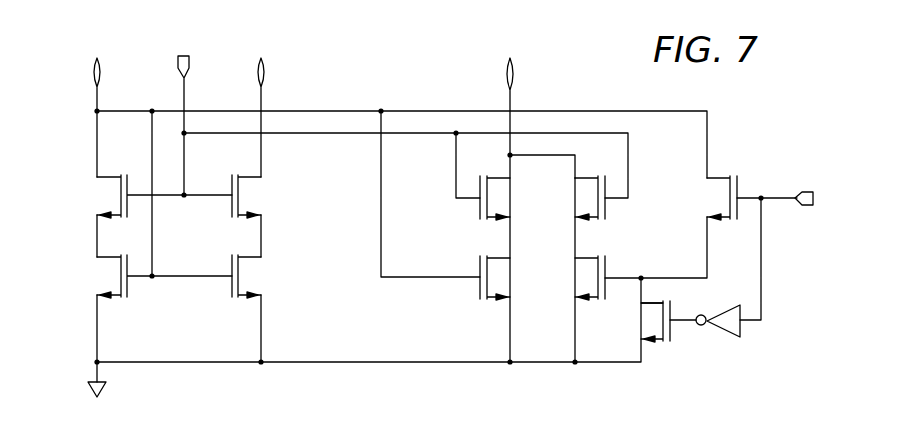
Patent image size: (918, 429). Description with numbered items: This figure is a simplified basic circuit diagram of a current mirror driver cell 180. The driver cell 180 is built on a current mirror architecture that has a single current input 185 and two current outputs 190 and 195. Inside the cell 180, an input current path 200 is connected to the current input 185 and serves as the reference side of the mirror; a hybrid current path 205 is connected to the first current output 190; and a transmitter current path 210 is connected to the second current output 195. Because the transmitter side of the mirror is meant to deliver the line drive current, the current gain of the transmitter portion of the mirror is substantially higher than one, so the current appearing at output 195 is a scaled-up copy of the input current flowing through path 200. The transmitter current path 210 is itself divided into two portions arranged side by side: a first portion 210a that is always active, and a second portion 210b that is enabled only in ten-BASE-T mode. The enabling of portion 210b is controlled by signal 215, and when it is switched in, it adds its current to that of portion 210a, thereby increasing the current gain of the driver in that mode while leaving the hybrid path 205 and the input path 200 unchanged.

The current mirror driver cell 180 is at (785, 357).
The current input 185 is at (92, 72).
The current output 190 is at (266, 72).
The current output 195 is at (515, 73).
The input current path 200 is at (79, 240).
The hybrid current path 205 is at (282, 242).
The transmitter current path 210 is at (556, 289).
The always active portion 210a is at (488, 232).
The 10BASE-T enabled portion 210b is at (600, 234).
The enable signal 215 is at (807, 190).